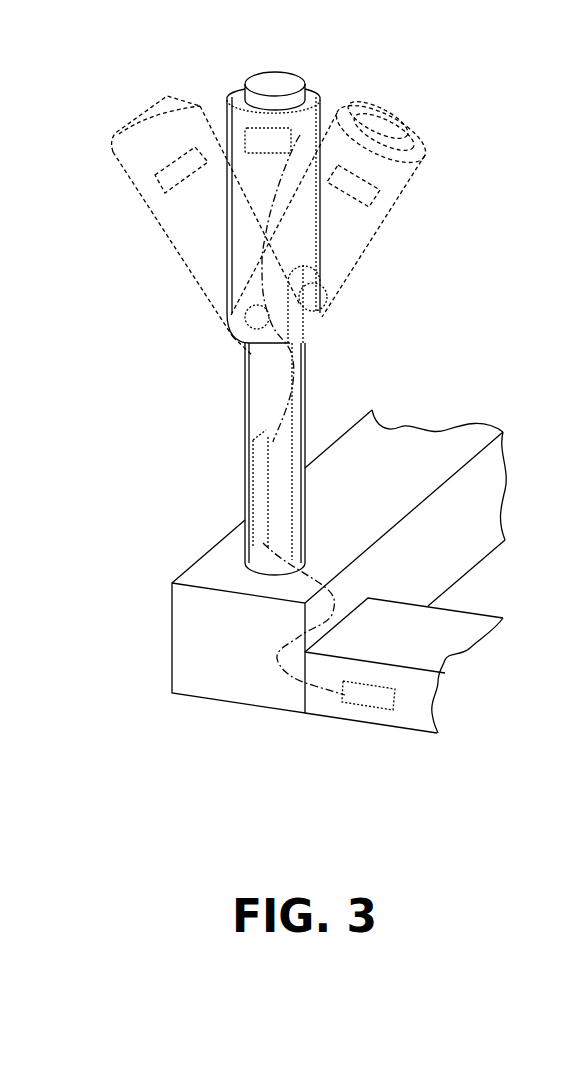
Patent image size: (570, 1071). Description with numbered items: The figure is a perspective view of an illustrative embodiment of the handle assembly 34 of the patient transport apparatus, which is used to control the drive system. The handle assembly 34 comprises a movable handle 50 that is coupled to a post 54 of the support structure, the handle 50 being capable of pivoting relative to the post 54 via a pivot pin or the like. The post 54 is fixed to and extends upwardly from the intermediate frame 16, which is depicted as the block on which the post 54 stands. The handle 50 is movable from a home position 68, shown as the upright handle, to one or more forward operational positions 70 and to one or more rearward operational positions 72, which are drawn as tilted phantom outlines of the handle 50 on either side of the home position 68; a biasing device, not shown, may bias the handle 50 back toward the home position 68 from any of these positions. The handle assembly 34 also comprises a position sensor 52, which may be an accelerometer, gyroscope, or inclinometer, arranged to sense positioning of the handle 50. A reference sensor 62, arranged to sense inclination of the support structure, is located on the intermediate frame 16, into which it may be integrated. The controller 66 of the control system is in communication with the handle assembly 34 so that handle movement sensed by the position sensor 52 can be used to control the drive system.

The intermediate frame 16 is at (380, 723).
The handle assembly 34 is at (160, 355).
The handle 50 is at (237, 95).
The position sensor 52 is at (300, 135).
The post 54 is at (292, 387).
The reference sensor 62 is at (395, 707).
The controller 66 is at (253, 467).
The home position 68 is at (277, 66).
The forward operational position 70 is at (403, 97).
The rearward operational position 72 is at (127, 97).